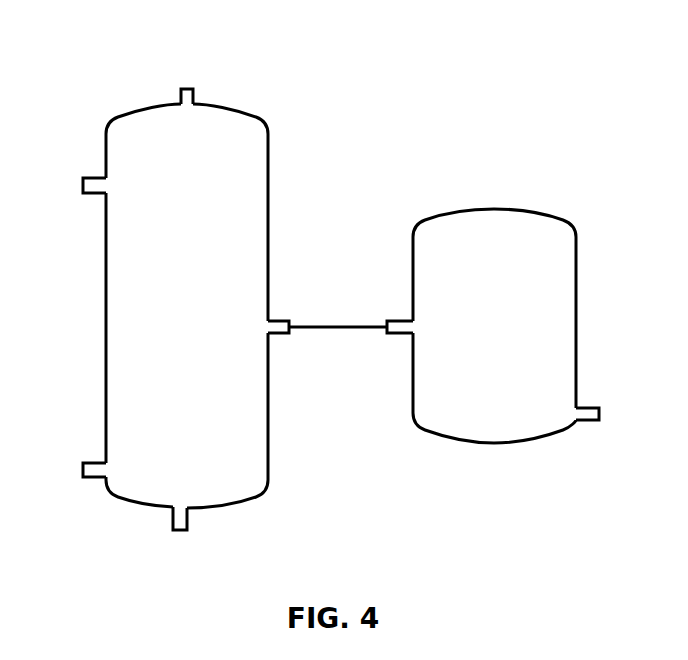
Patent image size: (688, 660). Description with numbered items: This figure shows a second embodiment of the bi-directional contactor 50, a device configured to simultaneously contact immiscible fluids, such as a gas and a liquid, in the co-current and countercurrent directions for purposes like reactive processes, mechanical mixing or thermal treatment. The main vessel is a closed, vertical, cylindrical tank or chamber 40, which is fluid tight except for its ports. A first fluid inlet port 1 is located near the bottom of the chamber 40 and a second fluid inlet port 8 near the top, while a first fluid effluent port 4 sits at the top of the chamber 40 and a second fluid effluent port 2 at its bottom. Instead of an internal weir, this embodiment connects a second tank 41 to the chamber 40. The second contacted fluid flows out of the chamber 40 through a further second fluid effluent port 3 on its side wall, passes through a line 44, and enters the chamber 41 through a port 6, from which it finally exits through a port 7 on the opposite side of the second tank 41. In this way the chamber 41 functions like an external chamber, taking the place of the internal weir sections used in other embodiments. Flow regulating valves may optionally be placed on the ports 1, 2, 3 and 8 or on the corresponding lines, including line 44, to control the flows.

The bi-directional contactor 50 is at (281, 134).
The chamber 40 is at (106, 120).
The second tank 41 is at (425, 218).
The line 44 is at (336, 329).
The first fluid inlet port 1 is at (92, 462).
The second fluid effluent port 2 is at (187, 518).
The second fluid effluent port 3 is at (274, 320).
The first fluid effluent port 4 is at (181, 95).
The port 6 is at (406, 320).
The port 7 is at (580, 407).
The second fluid inlet port 8 is at (93, 178).